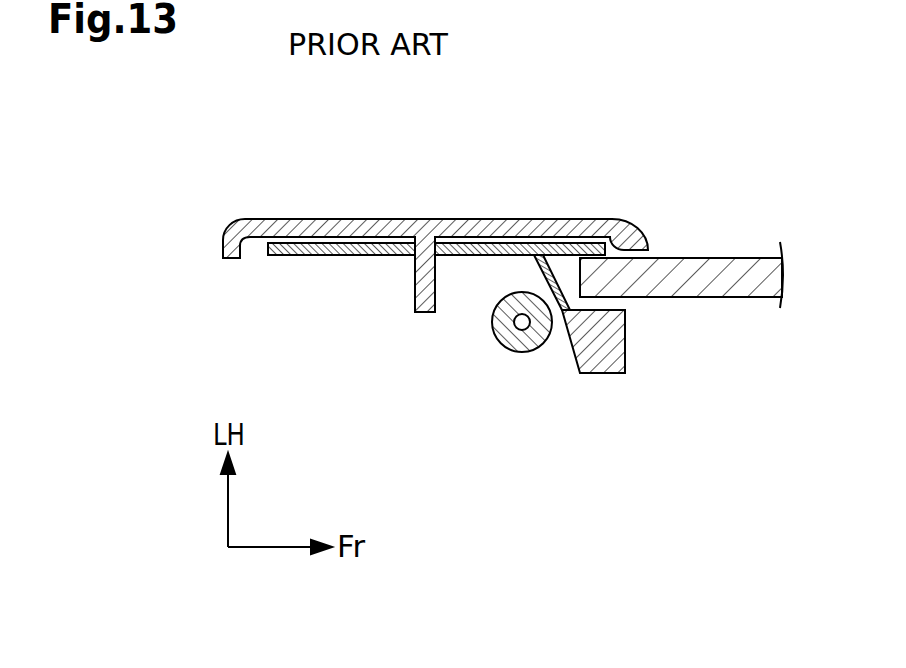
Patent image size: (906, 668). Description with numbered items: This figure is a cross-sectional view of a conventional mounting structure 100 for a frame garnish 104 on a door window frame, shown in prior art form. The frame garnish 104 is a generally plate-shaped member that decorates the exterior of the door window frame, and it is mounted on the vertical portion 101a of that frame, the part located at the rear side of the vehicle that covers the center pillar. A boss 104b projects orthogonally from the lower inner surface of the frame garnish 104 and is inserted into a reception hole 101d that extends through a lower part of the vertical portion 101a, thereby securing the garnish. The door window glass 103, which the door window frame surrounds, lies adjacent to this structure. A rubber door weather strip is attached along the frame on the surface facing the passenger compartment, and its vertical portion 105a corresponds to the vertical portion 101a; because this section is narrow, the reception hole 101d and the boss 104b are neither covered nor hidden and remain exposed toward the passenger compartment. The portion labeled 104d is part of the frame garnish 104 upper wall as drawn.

The mounting structure 100 is at (228, 143).
The vertical portion 101a is at (307, 256).
The reception hole 101d is at (420, 219).
The door window glass 103 is at (715, 287).
The frame garnish 104 is at (552, 207).
The boss 104b is at (413, 305).
The top wall of cover 104d is at (339, 218).
The vertical portion 105a is at (526, 352).